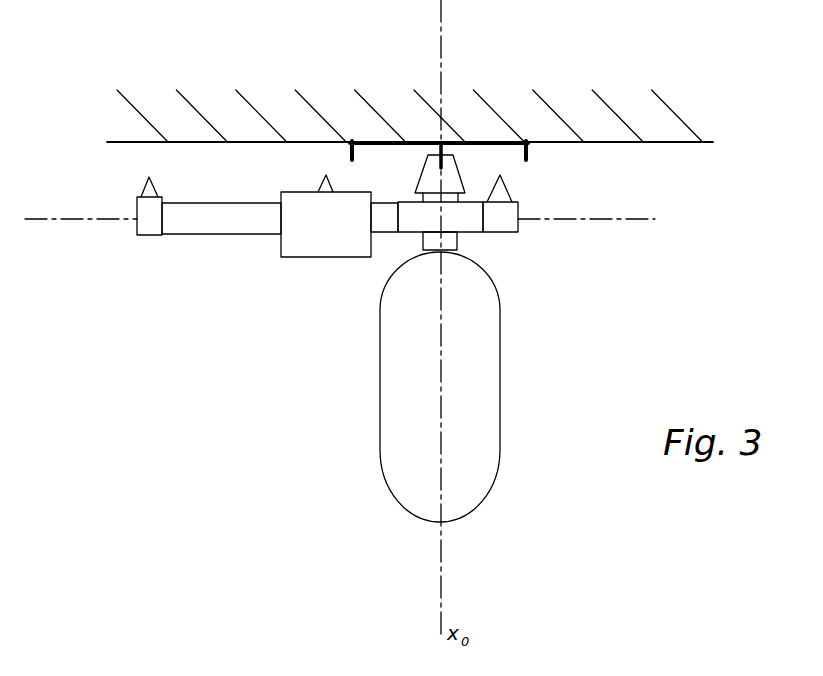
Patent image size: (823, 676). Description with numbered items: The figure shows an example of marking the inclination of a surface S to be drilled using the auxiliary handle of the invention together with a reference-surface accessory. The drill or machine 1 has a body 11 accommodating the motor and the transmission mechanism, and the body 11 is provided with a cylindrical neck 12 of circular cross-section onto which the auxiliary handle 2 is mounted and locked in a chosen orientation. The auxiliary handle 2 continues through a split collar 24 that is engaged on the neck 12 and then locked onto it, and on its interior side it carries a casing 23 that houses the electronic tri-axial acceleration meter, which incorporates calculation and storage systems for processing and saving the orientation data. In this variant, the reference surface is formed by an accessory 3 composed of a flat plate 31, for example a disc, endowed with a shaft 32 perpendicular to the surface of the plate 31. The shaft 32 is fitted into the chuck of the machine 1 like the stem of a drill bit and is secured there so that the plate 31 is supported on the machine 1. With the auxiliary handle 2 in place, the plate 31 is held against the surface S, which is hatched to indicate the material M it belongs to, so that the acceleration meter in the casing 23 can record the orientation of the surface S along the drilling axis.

The drill 1 is at (362, 416).
The auxiliary handle 2 is at (364, 232).
The accessory 3 is at (471, 90).
The body 11 is at (500, 389).
The cylindrical neck 12 is at (448, 180).
The casing 23 is at (342, 235).
The split collar 24 is at (463, 218).
The flat plate 31 is at (455, 143).
The shaft 32 is at (450, 158).
The surface S is at (250, 146).
The material M is at (410, 103).